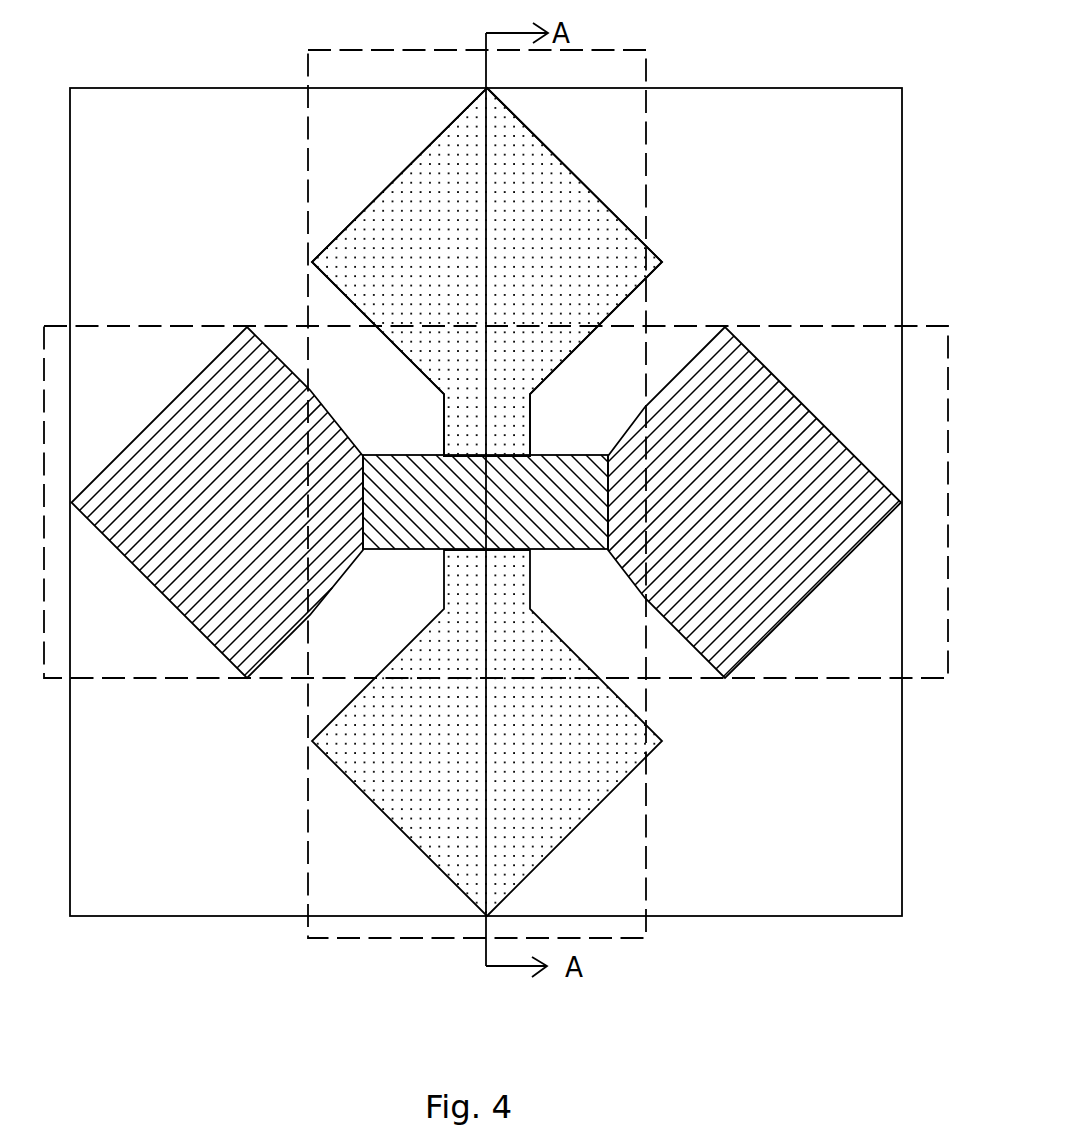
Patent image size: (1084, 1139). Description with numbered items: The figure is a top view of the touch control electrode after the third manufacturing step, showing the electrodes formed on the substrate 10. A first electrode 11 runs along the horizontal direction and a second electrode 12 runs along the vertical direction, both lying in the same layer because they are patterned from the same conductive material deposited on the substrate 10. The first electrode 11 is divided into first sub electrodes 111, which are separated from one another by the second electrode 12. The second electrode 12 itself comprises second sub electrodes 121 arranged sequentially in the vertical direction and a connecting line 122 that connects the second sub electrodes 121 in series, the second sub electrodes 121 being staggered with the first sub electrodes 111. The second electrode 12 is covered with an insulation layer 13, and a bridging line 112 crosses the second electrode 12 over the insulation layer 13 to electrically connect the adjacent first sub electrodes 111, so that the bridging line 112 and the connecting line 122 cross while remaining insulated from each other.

The substrate 10 is at (842, 145).
The first electrode 11 is at (173, 325).
The second electrode 12 is at (307, 137).
The insulation layer 13 is at (448, 202).
The first sub electrode 111 is at (187, 538).
The bridging line 112 is at (558, 513).
The second sub electrode 121 is at (610, 207).
The connecting line 122 is at (513, 423).